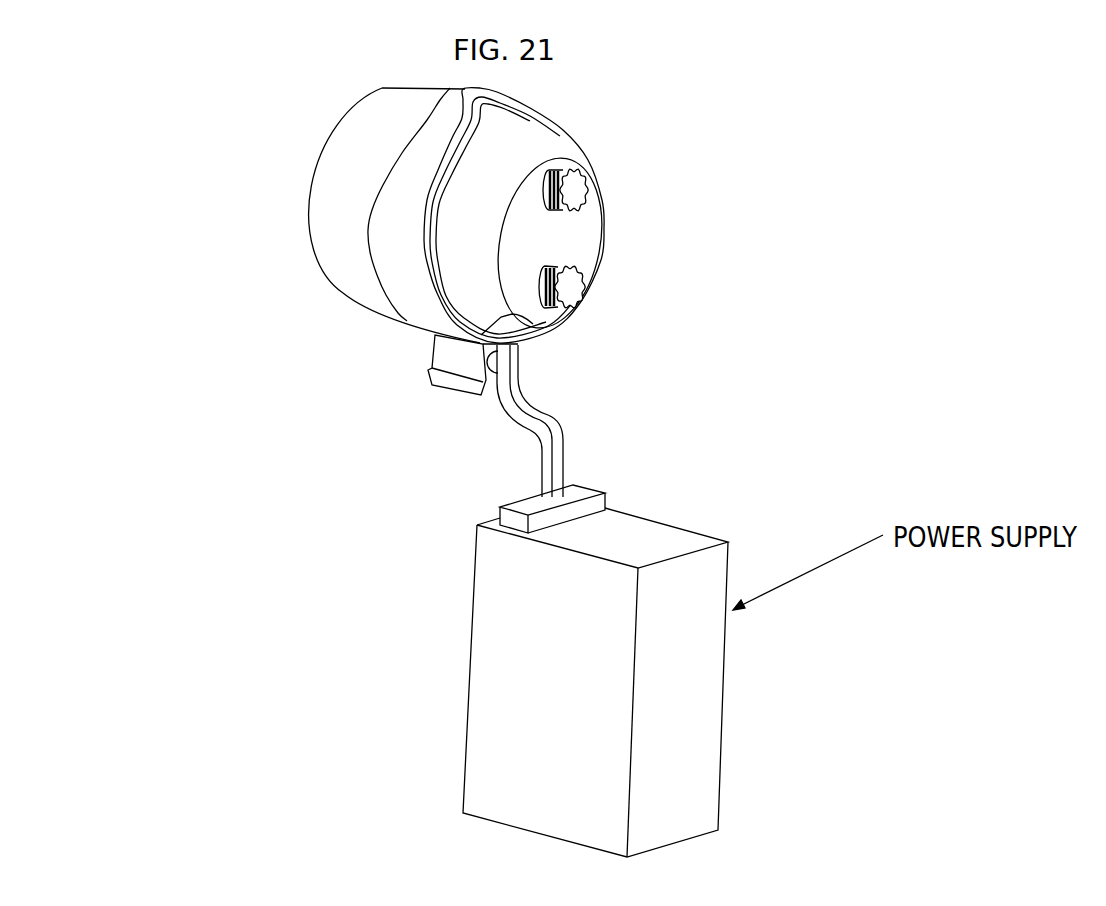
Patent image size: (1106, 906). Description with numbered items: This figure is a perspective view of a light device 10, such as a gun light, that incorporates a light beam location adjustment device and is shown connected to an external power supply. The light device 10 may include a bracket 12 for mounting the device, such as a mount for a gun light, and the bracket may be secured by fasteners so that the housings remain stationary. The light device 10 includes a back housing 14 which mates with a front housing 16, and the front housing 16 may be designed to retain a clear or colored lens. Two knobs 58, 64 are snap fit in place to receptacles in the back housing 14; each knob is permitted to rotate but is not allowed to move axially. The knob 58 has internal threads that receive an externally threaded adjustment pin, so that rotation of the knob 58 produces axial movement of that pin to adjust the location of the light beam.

The light device 10 is at (458, 406).
The bracket 12 is at (429, 381).
The back housing 14 is at (612, 223).
The front housing 16 is at (338, 111).
The knob 58 is at (593, 162).
The knob 64 is at (584, 302).